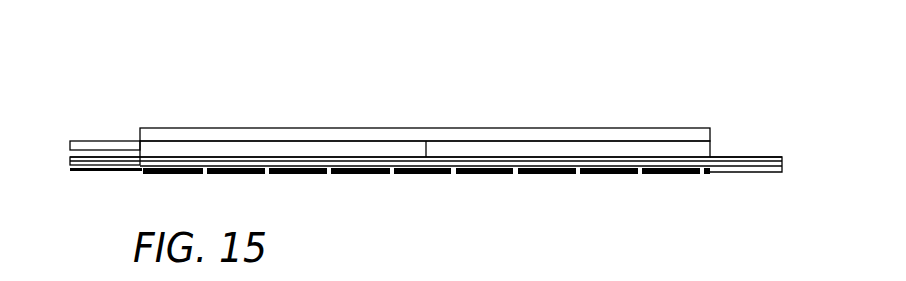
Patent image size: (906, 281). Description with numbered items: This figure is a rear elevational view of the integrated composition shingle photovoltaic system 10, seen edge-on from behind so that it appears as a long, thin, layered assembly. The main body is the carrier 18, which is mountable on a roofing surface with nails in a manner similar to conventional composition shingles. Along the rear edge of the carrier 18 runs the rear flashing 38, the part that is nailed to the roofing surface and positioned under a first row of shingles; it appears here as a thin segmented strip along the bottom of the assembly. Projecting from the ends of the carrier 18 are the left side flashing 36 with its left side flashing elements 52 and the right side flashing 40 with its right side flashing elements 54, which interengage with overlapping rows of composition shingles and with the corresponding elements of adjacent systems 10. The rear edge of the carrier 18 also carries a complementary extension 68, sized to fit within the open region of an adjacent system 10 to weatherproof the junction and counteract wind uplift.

The integrated composition shingle photovoltaic (PV) system 10 is at (435, 126).
The carrier 18 is at (415, 105).
The left side flashing 36 is at (761, 131).
The rear flashing 38 is at (455, 181).
The right side flashing 40 is at (65, 165).
The left side flashing elements 52 is at (738, 155).
The right side flashing elements 54 is at (97, 140).
The extension 68 is at (493, 135).